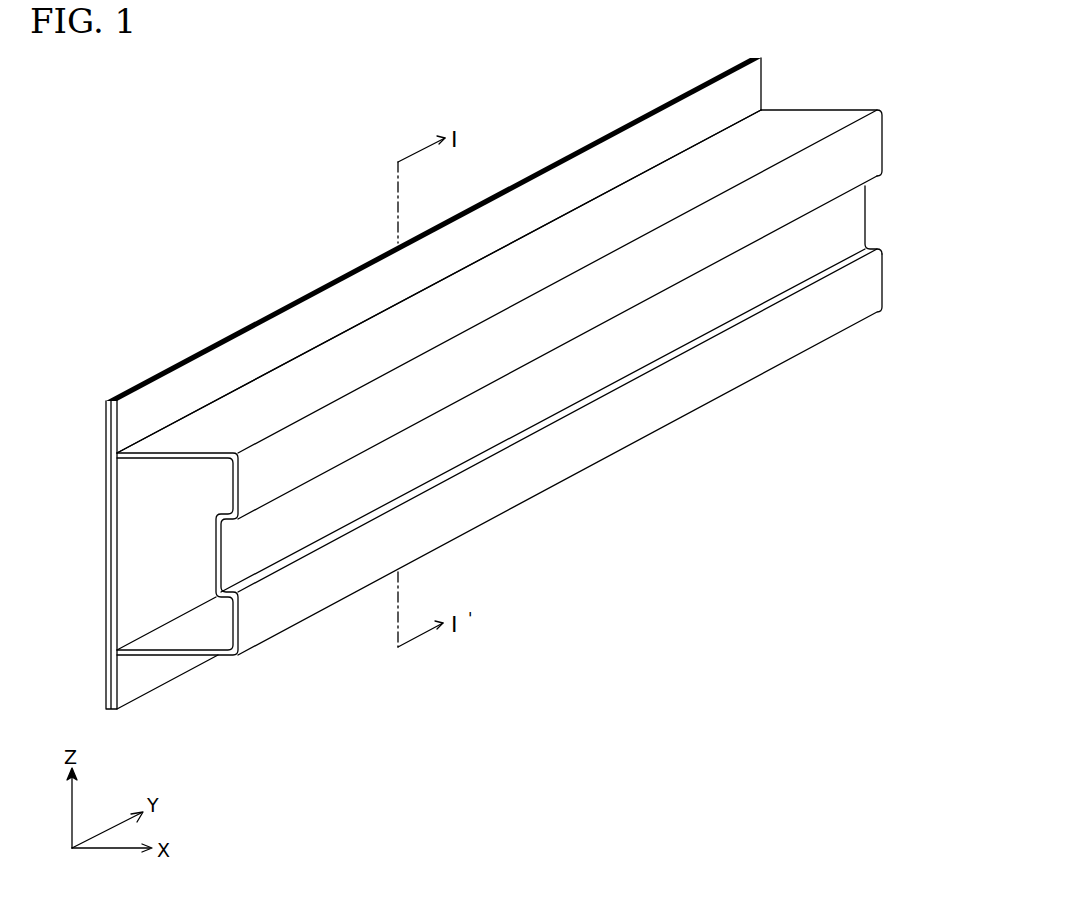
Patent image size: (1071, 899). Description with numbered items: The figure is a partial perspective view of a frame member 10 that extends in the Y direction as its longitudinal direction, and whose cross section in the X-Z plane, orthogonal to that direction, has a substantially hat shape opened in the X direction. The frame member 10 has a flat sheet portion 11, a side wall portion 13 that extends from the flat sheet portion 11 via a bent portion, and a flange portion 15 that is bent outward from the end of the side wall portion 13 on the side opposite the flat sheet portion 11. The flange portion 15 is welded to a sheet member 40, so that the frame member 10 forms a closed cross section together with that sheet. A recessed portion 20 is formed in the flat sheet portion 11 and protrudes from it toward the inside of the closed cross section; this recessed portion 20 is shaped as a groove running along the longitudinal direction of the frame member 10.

The frame member 10 is at (575, 531).
The flat sheet portion 11 is at (867, 287).
The side wall portion 13 is at (810, 126).
The flange portion 15 is at (240, 348).
The recessed portion 20 is at (882, 212).
The sheet member 40 is at (121, 518).